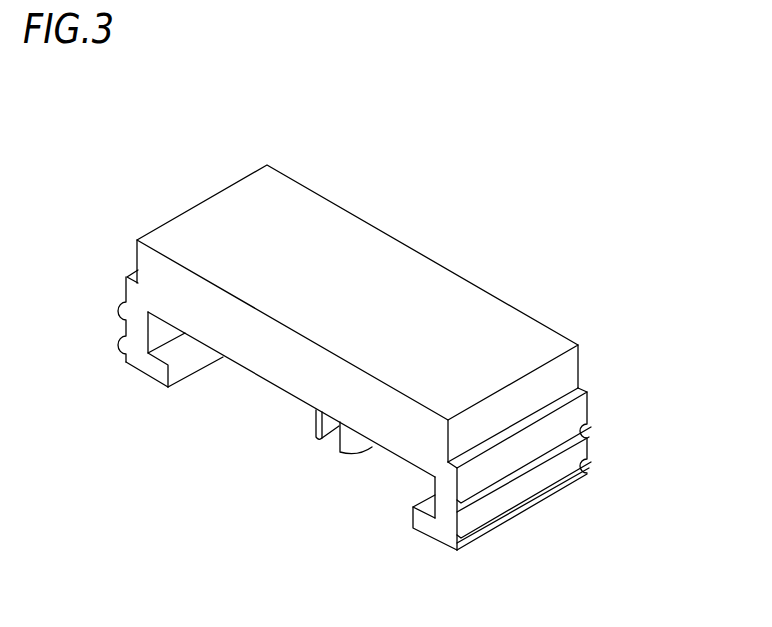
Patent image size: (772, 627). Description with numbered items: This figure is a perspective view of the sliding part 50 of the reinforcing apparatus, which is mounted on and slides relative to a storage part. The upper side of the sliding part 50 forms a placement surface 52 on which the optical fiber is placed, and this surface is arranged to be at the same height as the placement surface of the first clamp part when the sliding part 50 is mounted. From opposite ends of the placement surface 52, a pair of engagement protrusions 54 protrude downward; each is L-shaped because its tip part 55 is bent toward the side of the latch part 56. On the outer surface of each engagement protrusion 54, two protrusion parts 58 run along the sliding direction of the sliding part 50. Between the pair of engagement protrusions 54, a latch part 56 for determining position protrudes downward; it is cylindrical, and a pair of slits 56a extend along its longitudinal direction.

The sliding part 50 is at (367, 339).
The placement surface 52 is at (373, 281).
The engagement protrusion 54 is at (367, 415).
The tip part 55 is at (153, 371).
The latch part 56 is at (362, 454).
The slit 56a is at (336, 441).
The protrusion part 58 is at (515, 477).